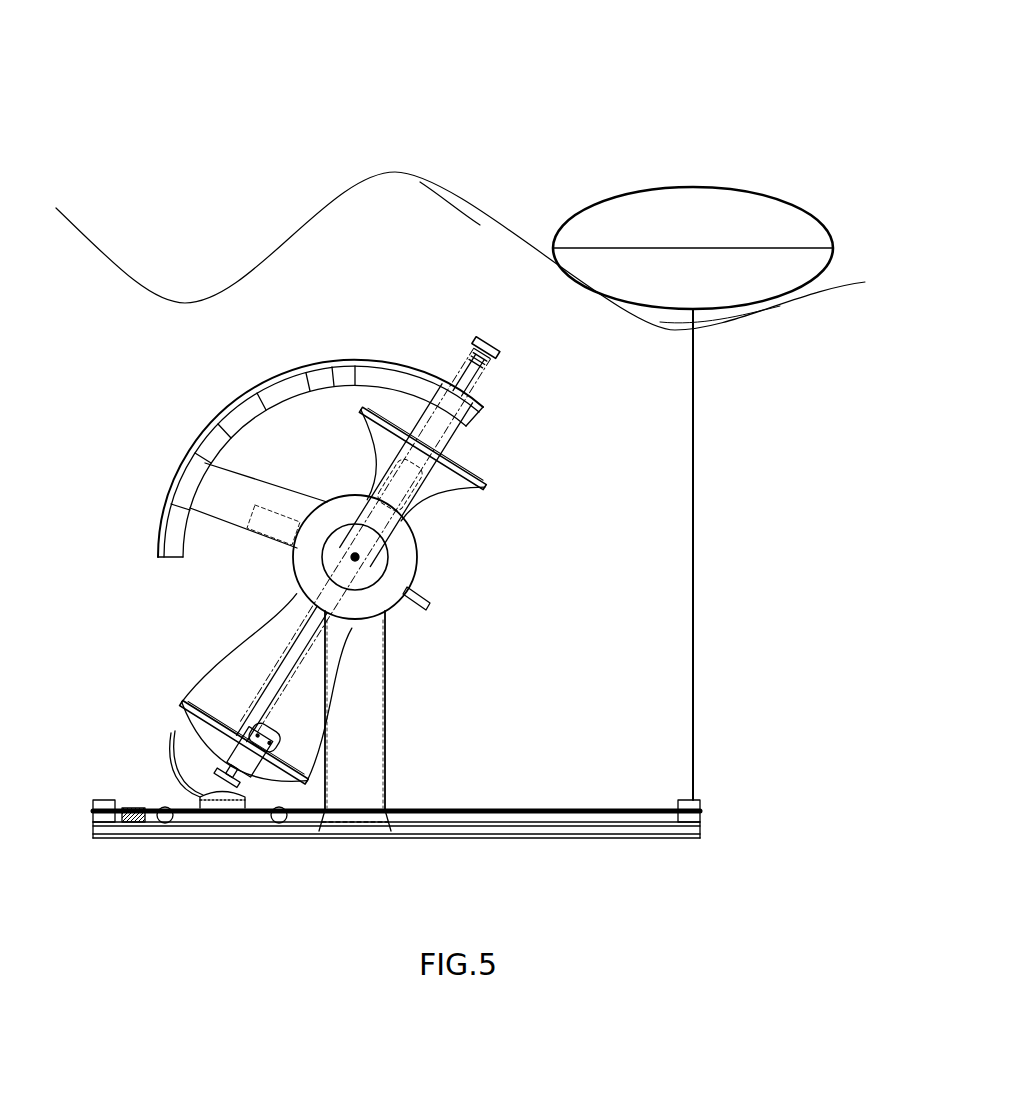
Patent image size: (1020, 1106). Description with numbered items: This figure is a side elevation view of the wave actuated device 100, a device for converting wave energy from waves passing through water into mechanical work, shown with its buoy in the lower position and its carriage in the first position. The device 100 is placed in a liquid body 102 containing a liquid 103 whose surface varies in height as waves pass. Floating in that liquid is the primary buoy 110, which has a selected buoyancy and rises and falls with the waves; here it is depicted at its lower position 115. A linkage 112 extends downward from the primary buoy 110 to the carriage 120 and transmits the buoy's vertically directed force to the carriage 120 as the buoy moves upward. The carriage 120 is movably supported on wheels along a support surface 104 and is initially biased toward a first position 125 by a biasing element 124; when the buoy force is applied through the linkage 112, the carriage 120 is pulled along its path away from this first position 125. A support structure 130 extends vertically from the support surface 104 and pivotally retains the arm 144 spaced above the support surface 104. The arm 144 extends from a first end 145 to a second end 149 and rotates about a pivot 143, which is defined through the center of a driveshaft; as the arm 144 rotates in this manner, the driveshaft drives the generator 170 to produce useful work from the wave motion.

The wave actuated device 100 is at (106, 70).
The liquid body 102 is at (316, 190).
The liquid 103 is at (482, 212).
The support surface 104 is at (587, 834).
The primary buoy 110 is at (695, 186).
The linkage 112 is at (695, 600).
The lower position 115 is at (772, 311).
The carriage 120 is at (221, 810).
The biasing element 124 is at (118, 803).
The first position 125 is at (150, 781).
The support structure 130 is at (402, 715).
The pivot 143 is at (360, 560).
The arm 144 is at (486, 448).
The first end 145 is at (498, 474).
The second end 149 is at (172, 716).
The generator 170 is at (416, 553).